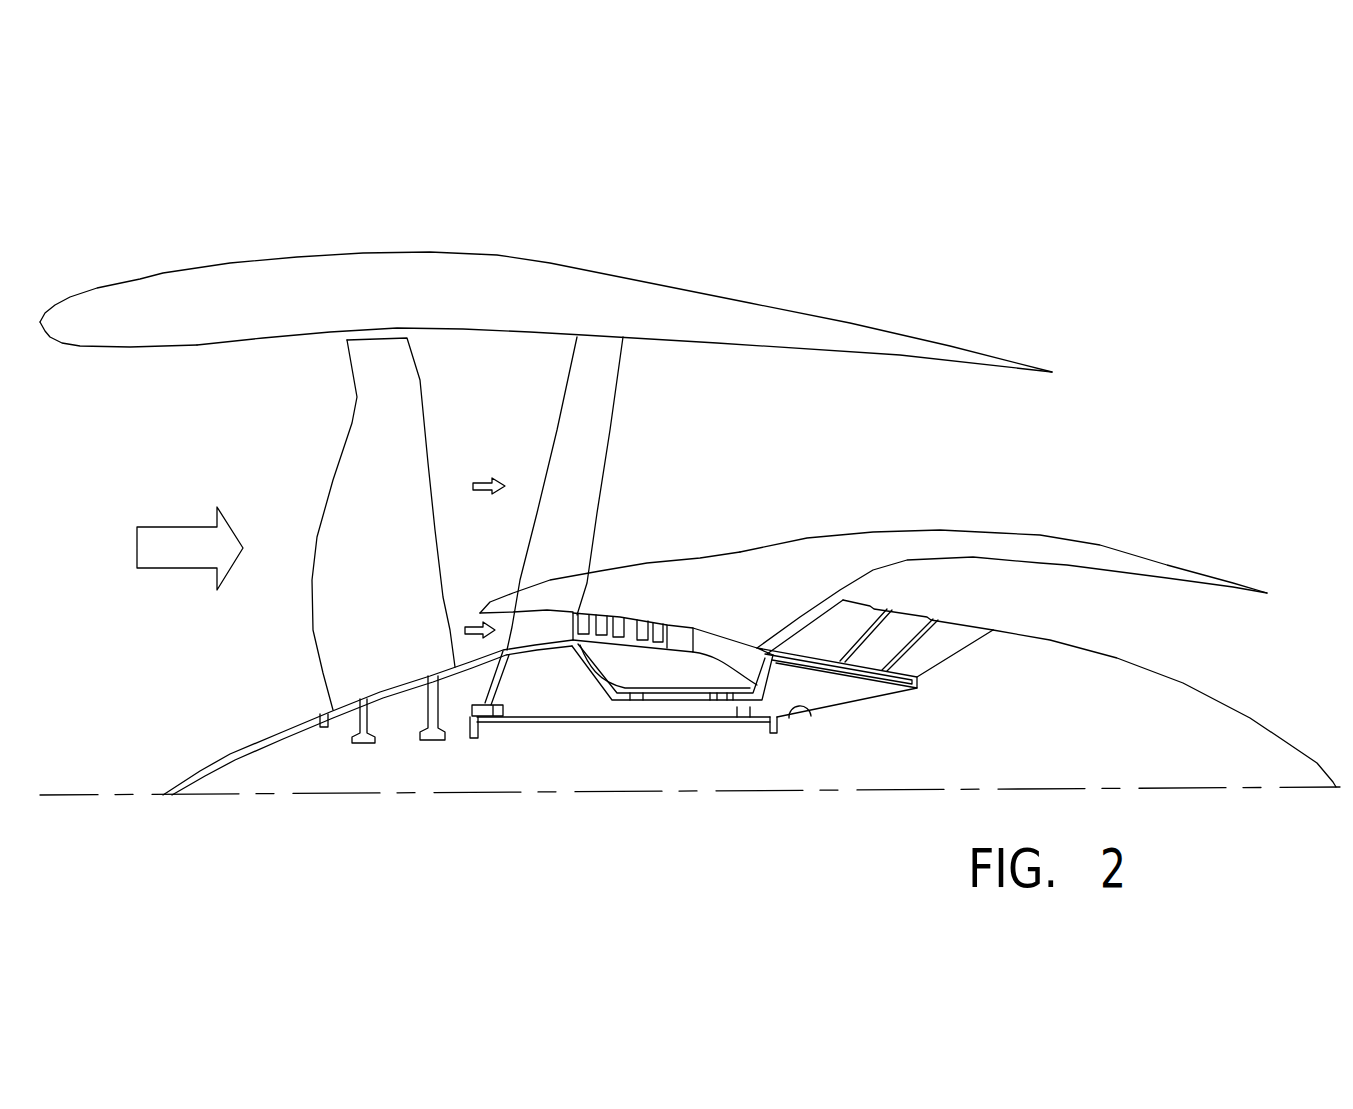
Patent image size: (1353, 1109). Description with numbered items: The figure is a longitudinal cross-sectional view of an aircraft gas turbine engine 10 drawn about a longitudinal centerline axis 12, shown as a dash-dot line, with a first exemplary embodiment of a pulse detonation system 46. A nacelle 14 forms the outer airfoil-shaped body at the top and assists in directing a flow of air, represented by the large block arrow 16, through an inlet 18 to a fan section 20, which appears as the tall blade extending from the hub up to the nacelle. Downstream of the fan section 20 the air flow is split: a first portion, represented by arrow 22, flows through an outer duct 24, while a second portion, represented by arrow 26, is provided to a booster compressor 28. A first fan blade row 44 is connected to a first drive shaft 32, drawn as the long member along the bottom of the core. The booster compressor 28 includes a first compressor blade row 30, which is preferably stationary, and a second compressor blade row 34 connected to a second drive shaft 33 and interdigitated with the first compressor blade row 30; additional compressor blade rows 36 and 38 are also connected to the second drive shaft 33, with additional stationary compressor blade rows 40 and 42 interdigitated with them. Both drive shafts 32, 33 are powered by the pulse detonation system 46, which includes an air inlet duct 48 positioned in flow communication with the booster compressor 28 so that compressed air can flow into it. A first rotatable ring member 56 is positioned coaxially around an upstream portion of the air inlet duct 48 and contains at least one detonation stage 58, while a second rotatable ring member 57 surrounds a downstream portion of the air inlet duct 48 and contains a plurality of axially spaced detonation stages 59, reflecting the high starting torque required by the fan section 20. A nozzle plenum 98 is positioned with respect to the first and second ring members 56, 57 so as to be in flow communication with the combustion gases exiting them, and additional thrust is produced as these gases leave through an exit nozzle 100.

The gas turbine engine 10 is at (1045, 257).
The longitudinal centerline axis 12 is at (82, 793).
The nacelle 14 is at (264, 260).
The flow of air 16 is at (180, 527).
The inlet 18 is at (197, 347).
The fan section 20 is at (314, 632).
The first portion of air flow 22 is at (484, 480).
The outer duct 24 is at (488, 334).
The second portion of air flow 26 is at (466, 625).
The booster compressor 28 is at (572, 620).
The first compressor blade row 30 is at (605, 615).
The first drive shaft 32 is at (547, 723).
The second drive shaft 33 is at (620, 675).
The second compressor blade row 34 is at (587, 612).
The additional compressor blade row 36 is at (619, 616).
The additional compressor blade row 38 is at (645, 619).
The additional stationary compressor blade row 40 is at (630, 640).
The additional stationary compressor blade row 42 is at (697, 619).
The first fan blade row 44 is at (343, 697).
The pulse detonation system 46 is at (876, 566).
The air inlet duct 48 is at (798, 708).
The first rotatable ring member 56 is at (790, 623).
The second rotatable ring member 57 is at (955, 655).
The detonation stage 58 is at (857, 610).
The detonation stages 59 is at (972, 628).
The nozzle plenum 98 is at (1028, 540).
The exit nozzle 100 is at (1067, 568).